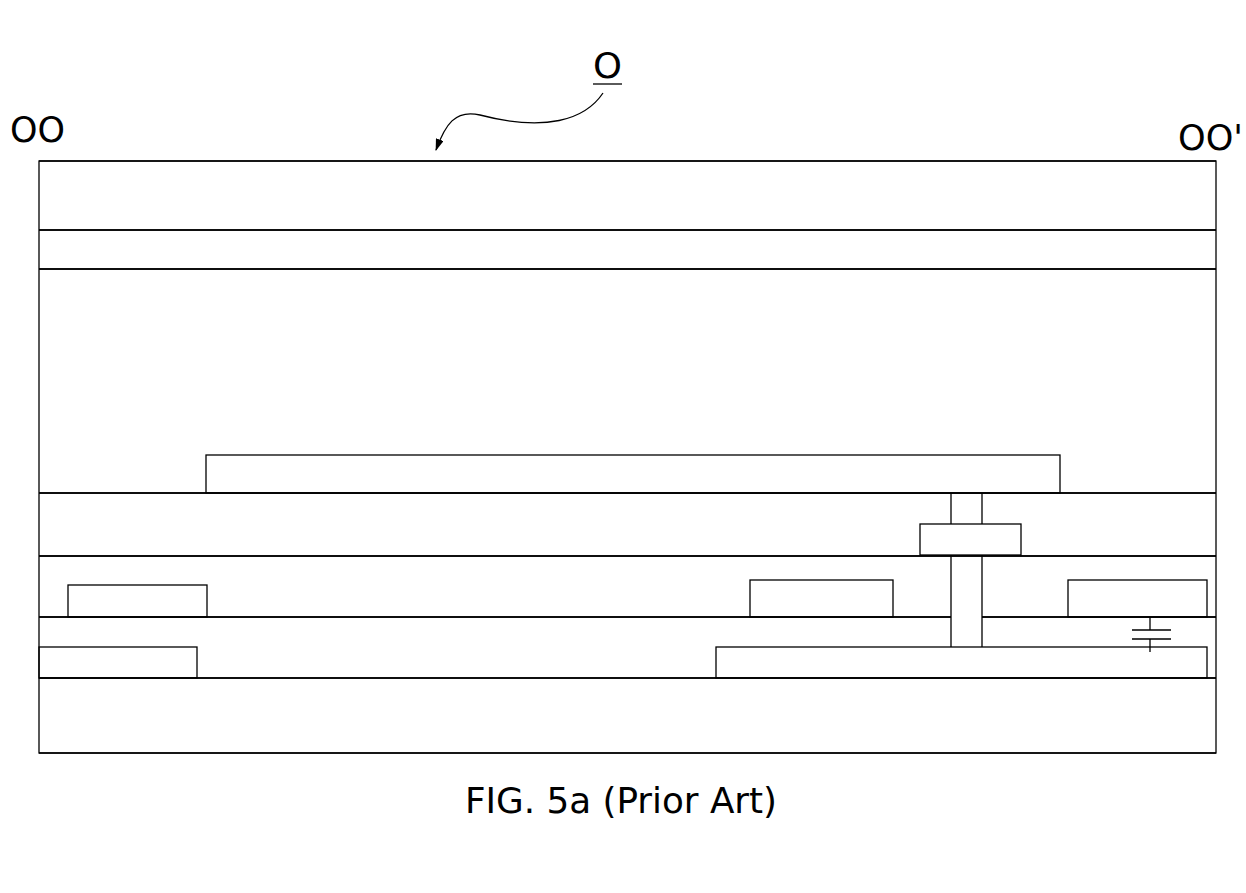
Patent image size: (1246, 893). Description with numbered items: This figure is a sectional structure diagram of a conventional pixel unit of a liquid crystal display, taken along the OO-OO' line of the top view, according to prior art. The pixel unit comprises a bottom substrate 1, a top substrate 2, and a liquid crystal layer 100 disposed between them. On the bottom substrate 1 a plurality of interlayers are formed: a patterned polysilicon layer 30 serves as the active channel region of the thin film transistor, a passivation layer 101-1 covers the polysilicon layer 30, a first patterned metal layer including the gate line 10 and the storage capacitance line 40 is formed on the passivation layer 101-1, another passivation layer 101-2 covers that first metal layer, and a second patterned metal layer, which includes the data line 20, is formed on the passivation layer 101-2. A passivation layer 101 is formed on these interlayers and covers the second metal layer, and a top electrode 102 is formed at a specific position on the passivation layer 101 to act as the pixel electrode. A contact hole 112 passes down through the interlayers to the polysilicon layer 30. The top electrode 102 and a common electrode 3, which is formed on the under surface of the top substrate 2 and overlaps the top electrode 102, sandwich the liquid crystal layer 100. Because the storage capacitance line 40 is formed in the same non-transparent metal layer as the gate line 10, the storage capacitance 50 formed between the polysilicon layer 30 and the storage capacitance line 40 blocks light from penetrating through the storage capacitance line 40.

The bottom substrate 1 is at (627, 715).
The top substrate 2 is at (627, 195).
The common electrode 3 is at (627, 249).
The gate line 10 is at (747, 577).
The data line 20 is at (1027, 522).
The polysilicon layer 30 is at (182, 680).
The Cst line 40 is at (98, 583).
The Cst (storage capacitance) 50 is at (1137, 645).
The liquid crystal layer 100 is at (627, 381).
The passivation layer 101 is at (627, 524).
The passivation layer 101-1 is at (627, 647).
The passivation layer 101-2 is at (627, 586).
The top electrode 102 is at (633, 474).
The contact hole 112 is at (948, 577).